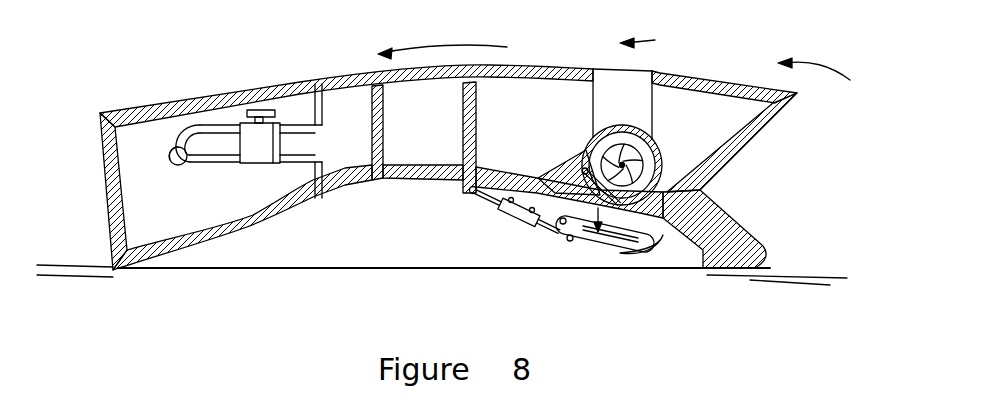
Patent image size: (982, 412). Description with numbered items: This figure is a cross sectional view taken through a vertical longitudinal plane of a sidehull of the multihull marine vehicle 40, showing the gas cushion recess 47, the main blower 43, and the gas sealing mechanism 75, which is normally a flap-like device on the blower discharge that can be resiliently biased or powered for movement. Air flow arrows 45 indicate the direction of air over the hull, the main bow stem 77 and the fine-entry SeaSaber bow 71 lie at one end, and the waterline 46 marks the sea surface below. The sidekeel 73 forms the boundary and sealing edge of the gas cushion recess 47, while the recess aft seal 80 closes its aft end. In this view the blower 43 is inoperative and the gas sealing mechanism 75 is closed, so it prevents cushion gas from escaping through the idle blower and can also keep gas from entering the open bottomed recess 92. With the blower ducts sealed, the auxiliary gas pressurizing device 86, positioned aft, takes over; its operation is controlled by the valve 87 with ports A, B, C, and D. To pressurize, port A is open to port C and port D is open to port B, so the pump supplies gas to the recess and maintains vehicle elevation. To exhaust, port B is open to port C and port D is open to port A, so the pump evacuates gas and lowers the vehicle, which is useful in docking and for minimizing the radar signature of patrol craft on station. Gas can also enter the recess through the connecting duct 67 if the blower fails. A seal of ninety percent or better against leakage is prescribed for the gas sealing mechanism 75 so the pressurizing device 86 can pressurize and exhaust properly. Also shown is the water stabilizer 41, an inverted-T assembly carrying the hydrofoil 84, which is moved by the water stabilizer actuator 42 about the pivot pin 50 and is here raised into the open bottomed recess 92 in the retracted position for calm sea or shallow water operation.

The multihull marine vehicle 40 is at (232, 90).
The air flow arrows 45 is at (448, 46).
The gas pressurizing device 86 is at (175, 148).
The valve 87 is at (246, 152).
The duct 67 is at (433, 139).
The gas cushion recess 47 is at (356, 247).
The gas sealing mechanism 75 is at (567, 177).
The blower 43 is at (645, 147).
The main bow stem 77 is at (747, 133).
The SeaSaber bow 71 is at (742, 225).
The waterline 46 is at (782, 270).
The recess aft seal 80 is at (204, 262).
The sidekeel 73 is at (348, 268).
The open bottomed recess 92 is at (517, 250).
The pivot pin 50 is at (545, 240).
The water stabilizer 41 is at (605, 258).
The hydrofoil 84 is at (675, 268).
The water stabilizer actuator 42 is at (505, 212).
The valve port A is at (322, 103).
The valve port B is at (318, 152).
The valve port C is at (220, 172).
The valve port D is at (190, 140).